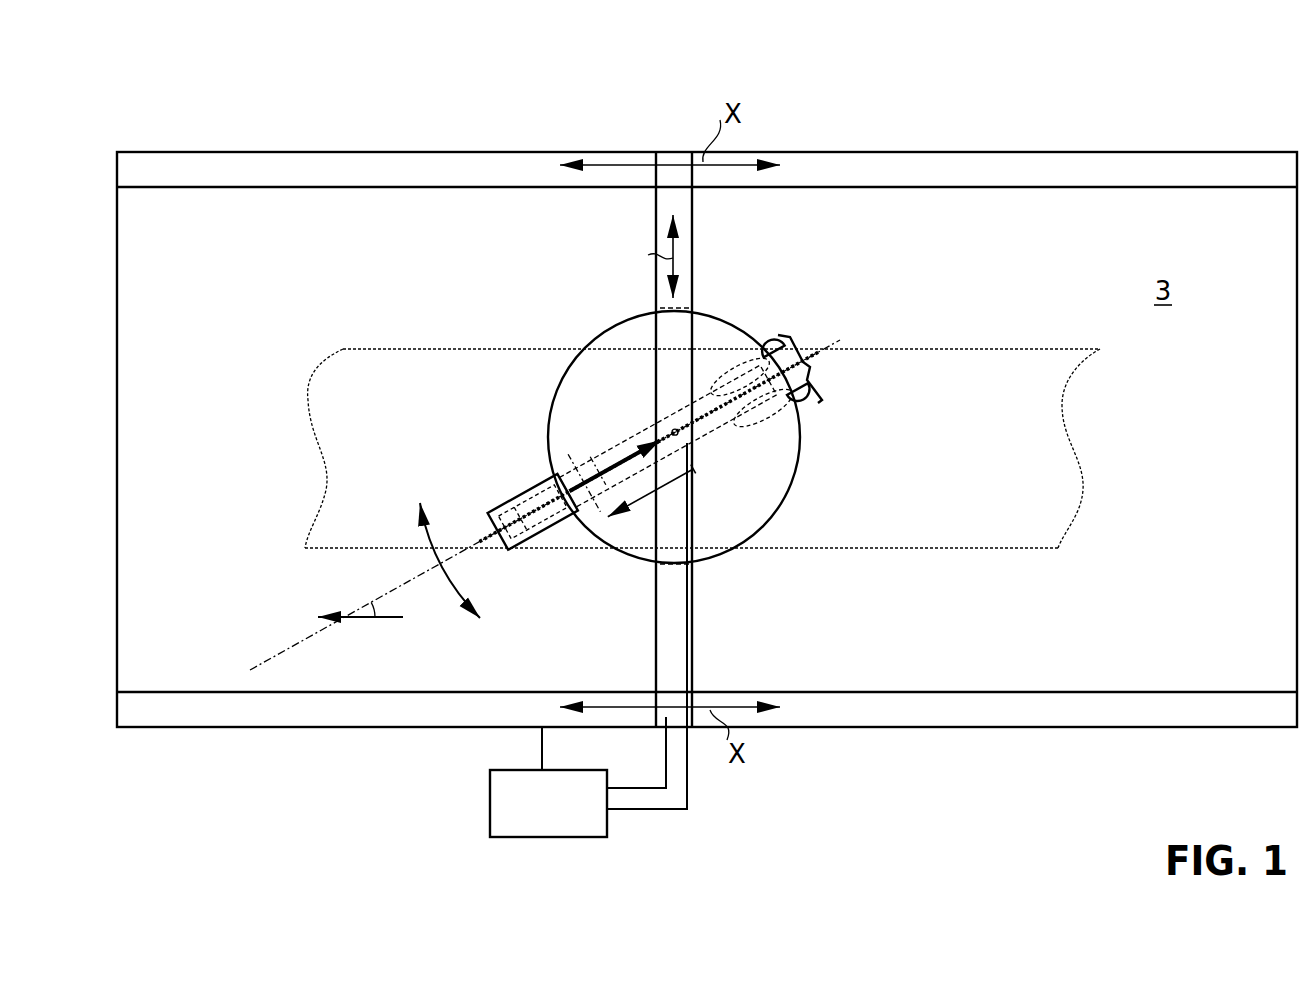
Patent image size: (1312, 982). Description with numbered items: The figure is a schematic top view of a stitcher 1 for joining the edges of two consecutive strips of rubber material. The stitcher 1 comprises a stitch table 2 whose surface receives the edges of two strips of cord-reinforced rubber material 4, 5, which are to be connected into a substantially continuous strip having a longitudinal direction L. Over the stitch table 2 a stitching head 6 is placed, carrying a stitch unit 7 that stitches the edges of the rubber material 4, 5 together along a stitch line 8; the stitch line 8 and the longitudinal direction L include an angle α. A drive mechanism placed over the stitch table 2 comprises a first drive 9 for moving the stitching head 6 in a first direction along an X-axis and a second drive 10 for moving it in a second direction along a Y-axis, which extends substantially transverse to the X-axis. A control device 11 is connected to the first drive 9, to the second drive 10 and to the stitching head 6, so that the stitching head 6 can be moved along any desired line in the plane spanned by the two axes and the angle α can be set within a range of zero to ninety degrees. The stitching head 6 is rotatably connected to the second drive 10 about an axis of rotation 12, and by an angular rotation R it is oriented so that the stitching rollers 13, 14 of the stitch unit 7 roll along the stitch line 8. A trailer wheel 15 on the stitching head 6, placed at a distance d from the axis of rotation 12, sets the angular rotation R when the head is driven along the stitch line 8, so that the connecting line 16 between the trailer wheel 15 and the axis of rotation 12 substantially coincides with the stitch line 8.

The stitcher 1 is at (1115, 121).
The stitch table 2 is at (822, 200).
The cord-reinforced rubber material 4 is at (451, 400).
The cord-reinforced rubber material 5 is at (1021, 518).
The stitching head 6 is at (720, 552).
The stitch unit 7 is at (770, 384).
The stitch line 8 is at (317, 633).
The first drive 9 is at (398, 170).
The second drive 10 is at (667, 648).
The control device 11 is at (498, 812).
The axis of rotation 12 is at (672, 432).
The stitching roller 13 is at (805, 403).
The stitching roller 14 is at (770, 340).
The trailer wheel 15 is at (592, 498).
The connecting line 16 is at (627, 452).